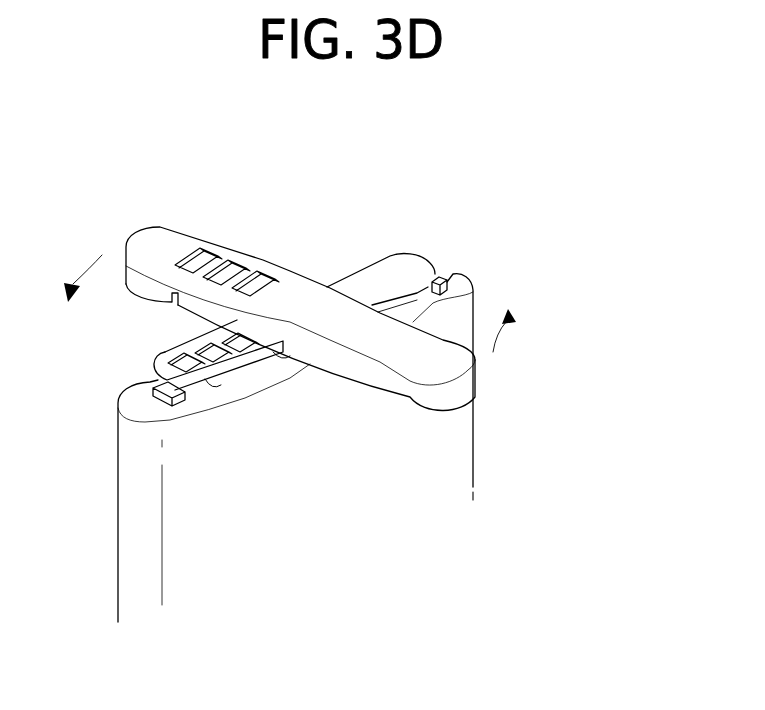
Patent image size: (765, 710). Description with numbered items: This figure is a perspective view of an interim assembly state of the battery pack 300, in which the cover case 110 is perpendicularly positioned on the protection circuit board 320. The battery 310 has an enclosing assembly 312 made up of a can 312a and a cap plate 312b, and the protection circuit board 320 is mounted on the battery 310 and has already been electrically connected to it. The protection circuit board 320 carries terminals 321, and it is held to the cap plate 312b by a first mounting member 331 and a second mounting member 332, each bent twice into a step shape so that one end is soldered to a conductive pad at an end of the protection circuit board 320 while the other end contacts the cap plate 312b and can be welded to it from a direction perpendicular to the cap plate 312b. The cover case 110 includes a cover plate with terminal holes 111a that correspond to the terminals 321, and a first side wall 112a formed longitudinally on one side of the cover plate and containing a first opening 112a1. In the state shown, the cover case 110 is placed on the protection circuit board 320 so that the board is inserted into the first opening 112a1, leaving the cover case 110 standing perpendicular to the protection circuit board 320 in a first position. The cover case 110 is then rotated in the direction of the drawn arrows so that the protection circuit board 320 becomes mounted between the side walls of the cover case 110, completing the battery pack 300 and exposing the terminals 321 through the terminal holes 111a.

The battery pack 300 is at (550, 168).
The battery 310 is at (482, 470).
The enclosing assembly 312 is at (588, 303).
The can 312a is at (458, 422).
The cap plate 312b is at (432, 304).
The protection circuit board 320 is at (418, 251).
The terminals 321 is at (215, 337).
The first mounting member 331 is at (152, 395).
The second mounting member 332 is at (442, 280).
The cover case 110 is at (311, 270).
The terminal holes 111a is at (210, 252).
The first side wall 112a is at (370, 372).
The first opening 112a1 is at (190, 310).